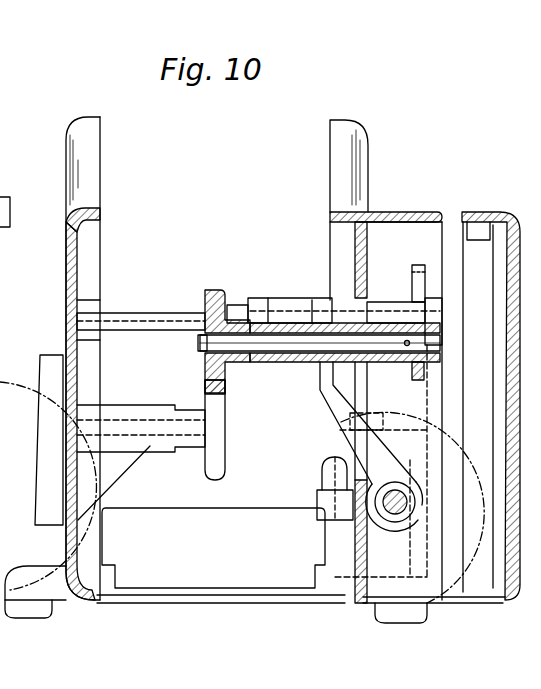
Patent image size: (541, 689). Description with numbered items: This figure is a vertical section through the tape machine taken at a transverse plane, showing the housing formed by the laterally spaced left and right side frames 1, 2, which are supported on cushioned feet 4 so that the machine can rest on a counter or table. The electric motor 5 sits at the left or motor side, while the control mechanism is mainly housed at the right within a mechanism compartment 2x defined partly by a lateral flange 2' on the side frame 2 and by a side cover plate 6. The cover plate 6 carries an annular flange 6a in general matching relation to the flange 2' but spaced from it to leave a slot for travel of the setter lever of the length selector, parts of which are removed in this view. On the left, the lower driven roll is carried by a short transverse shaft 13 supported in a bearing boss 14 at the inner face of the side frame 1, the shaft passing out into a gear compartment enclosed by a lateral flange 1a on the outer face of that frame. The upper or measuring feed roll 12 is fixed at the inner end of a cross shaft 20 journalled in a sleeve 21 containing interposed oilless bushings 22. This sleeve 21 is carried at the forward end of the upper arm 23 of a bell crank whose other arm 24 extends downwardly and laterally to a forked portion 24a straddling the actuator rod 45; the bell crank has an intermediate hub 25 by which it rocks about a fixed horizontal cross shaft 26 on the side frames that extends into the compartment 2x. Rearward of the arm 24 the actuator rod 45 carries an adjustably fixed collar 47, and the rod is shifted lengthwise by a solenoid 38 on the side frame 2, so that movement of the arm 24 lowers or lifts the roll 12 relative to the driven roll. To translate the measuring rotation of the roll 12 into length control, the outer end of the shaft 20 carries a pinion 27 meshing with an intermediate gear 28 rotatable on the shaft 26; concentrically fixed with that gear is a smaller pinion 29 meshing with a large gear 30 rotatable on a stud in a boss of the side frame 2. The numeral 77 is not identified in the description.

The left side frame 1 is at (74, 150).
The lateral enclosing flange 1a is at (50, 356).
The right side frame 2 is at (365, 361).
The lateral flange 2' is at (386, 202).
The mechanism compartment 2x is at (410, 232).
The cushioned feet 4 is at (48, 612).
The electric motor 5 is at (14, 390).
The side cover plate 6 is at (494, 222).
The annular flange 6a is at (483, 228).
The upper feed roll 12 is at (210, 292).
The transverse shaft 13 is at (156, 452).
The bearing boss 14 is at (176, 405).
The cross shaft 20 is at (200, 344).
The sleeve 21 is at (280, 362).
The oilless bushings 22 is at (320, 343).
The upper arm 23 is at (262, 318).
The arm 24 is at (324, 401).
The forked portion 24a is at (342, 498).
The intermediate hub 25 is at (299, 298).
The fixed horizontal cross shaft 26 is at (190, 313).
The pinion 27 is at (406, 366).
The intermediate gear 28 is at (411, 271).
The smaller pinion 29 is at (442, 297).
The large gear 30 is at (436, 392).
The solenoid 38 is at (462, 452).
The actuator rod 45 is at (393, 515).
The collar 47 is at (408, 522).
The hub 77 is at (210, 468).